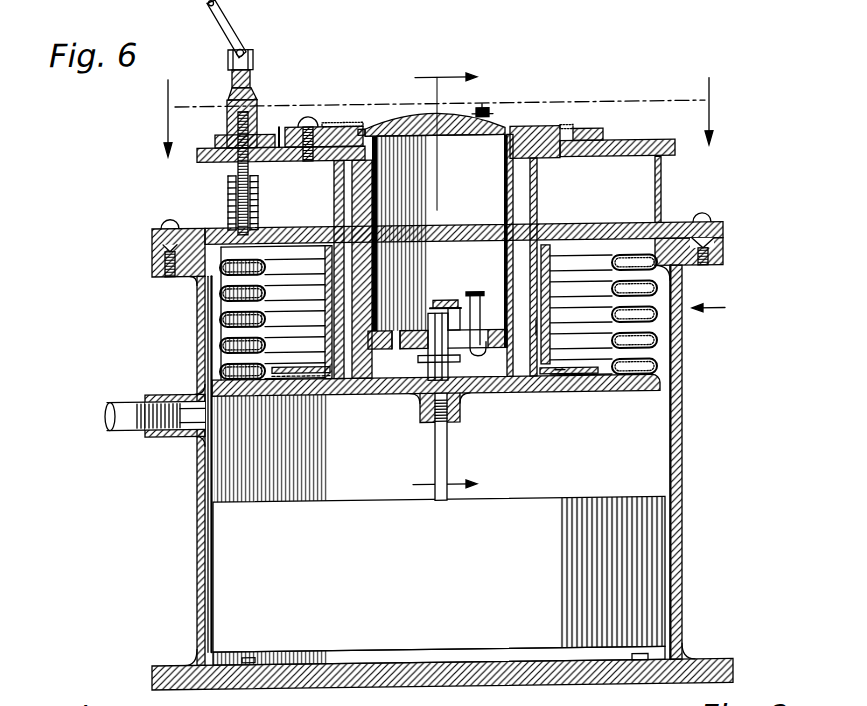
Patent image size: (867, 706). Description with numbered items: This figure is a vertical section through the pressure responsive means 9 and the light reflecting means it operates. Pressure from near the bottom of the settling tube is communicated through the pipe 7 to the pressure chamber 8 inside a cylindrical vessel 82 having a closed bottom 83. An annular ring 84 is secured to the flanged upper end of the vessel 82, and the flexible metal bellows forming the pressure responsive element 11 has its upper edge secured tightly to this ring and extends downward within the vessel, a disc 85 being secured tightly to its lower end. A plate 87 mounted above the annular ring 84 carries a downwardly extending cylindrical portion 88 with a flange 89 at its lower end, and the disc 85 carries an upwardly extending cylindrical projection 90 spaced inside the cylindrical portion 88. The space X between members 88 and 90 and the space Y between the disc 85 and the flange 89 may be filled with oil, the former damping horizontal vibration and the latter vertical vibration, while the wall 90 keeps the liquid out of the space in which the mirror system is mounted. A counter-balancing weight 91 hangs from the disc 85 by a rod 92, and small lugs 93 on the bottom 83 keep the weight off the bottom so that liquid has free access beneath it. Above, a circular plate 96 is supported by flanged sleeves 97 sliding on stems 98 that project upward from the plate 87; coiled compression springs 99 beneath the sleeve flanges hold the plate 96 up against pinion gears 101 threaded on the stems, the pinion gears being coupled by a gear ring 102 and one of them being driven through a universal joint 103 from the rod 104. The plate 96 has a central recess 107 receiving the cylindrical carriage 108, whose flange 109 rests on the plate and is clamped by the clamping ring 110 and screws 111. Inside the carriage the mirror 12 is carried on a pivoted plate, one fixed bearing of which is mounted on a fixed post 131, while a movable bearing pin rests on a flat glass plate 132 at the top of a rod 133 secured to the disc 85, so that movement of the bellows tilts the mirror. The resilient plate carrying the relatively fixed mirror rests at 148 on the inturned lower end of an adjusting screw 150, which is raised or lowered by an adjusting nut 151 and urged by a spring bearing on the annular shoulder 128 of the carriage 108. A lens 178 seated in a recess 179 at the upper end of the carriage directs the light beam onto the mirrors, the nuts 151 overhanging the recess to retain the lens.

The pipe 7 is at (437, 114).
The pressure chamber 8 is at (640, 447).
The pressure responsive means 9 is at (716, 308).
The pressure responsive element 11 is at (658, 362).
The mirror 12 is at (439, 306).
The cylindrical vessel 82 is at (685, 484).
The closed bottom 83 is at (588, 676).
The annular ring 84 is at (725, 254).
The disc 85 is at (600, 395).
The plate 87 is at (152, 242).
The cylindrical portion 88 is at (562, 297).
The flange 89 is at (592, 383).
The cylindrical projection 90 is at (536, 212).
The counter-balancing weight 91 is at (640, 591).
The rod 92 is at (437, 453).
The small lugs 93 is at (645, 670).
The circular plate 96 is at (640, 152).
The flanged sleeves 97 is at (212, 165).
The stems 98 is at (220, 206).
The coiled compression springs 99 is at (218, 219).
The pinion gears 101 is at (233, 133).
The gear ring 102 is at (281, 133).
The universal joint 103 is at (249, 65).
The rod 104 is at (210, 26).
The central recess 107 is at (330, 158).
The cylindrical carriage 108 is at (373, 218).
The flange 109 is at (546, 118).
The clamping ring 110 is at (328, 129).
The screws 111 is at (320, 130).
The annular shoulder 128 is at (508, 157).
The fixed post 131 is at (469, 324).
The flat glass plate 132 is at (433, 316).
The rod 133 is at (436, 339).
The resting point of L-shaped plate extremity 148 is at (472, 298).
The adjusting screw 150 is at (461, 365).
The adjusting nut 151 is at (490, 118).
The lens 178 is at (403, 121).
The recess 179 is at (354, 137).
The space between cylindrical members X is at (542, 334).
The space between disc and flange Y is at (560, 381).